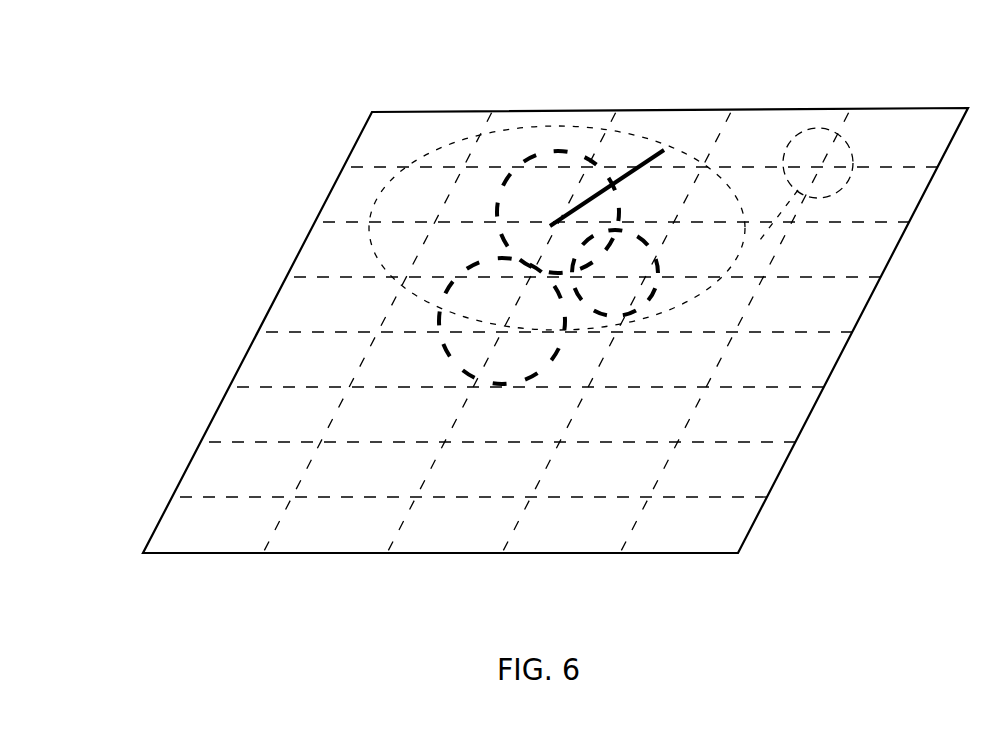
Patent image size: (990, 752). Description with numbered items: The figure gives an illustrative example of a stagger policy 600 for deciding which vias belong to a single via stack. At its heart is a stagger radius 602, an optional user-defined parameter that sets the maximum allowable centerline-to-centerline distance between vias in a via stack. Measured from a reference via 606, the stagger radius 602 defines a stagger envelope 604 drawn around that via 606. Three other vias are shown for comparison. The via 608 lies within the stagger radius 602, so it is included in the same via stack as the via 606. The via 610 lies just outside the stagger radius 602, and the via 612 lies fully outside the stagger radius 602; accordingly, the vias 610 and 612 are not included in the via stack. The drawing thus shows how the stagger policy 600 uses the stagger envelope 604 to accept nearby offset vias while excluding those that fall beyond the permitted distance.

The stagger policy 600 is at (260, 44).
The stagger radius 602 is at (662, 152).
The stagger envelope 604 is at (468, 130).
The via 606 is at (542, 148).
The via 608 is at (630, 320).
The via 610 is at (444, 346).
The via 612 is at (782, 253).